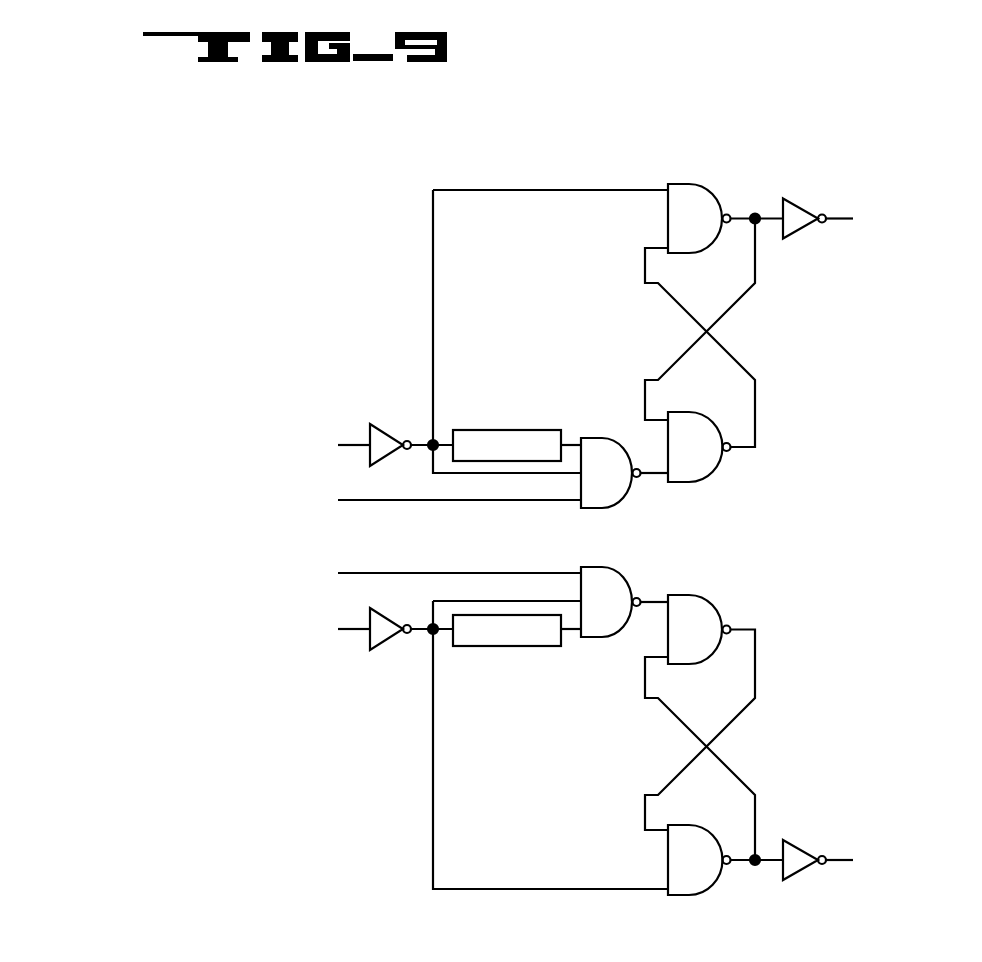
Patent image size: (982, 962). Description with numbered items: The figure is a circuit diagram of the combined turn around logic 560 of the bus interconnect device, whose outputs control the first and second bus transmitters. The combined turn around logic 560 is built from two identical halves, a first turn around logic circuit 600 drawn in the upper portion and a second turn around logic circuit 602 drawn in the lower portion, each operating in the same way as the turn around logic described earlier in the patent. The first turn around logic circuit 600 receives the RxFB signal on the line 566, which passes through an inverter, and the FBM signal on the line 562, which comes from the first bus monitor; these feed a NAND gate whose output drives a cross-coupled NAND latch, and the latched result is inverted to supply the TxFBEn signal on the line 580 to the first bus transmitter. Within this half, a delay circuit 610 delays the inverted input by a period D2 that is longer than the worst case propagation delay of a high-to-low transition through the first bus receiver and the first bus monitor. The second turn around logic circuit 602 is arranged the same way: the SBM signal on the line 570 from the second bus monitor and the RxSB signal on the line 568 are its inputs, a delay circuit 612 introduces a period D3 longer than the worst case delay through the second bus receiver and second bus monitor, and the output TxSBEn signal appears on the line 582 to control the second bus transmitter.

The combined turn around logic 560 is at (350, 192).
The line 562 is at (366, 500).
The line 566 is at (356, 443).
The line 568 is at (351, 633).
The line 570 is at (382, 573).
The line 580 is at (836, 219).
The line 582 is at (835, 860).
The first turn around logic circuit 600 is at (800, 450).
The second turn around logic circuit 602 is at (800, 628).
The delay circuit 610 is at (503, 430).
The delay circuit 612 is at (503, 648).